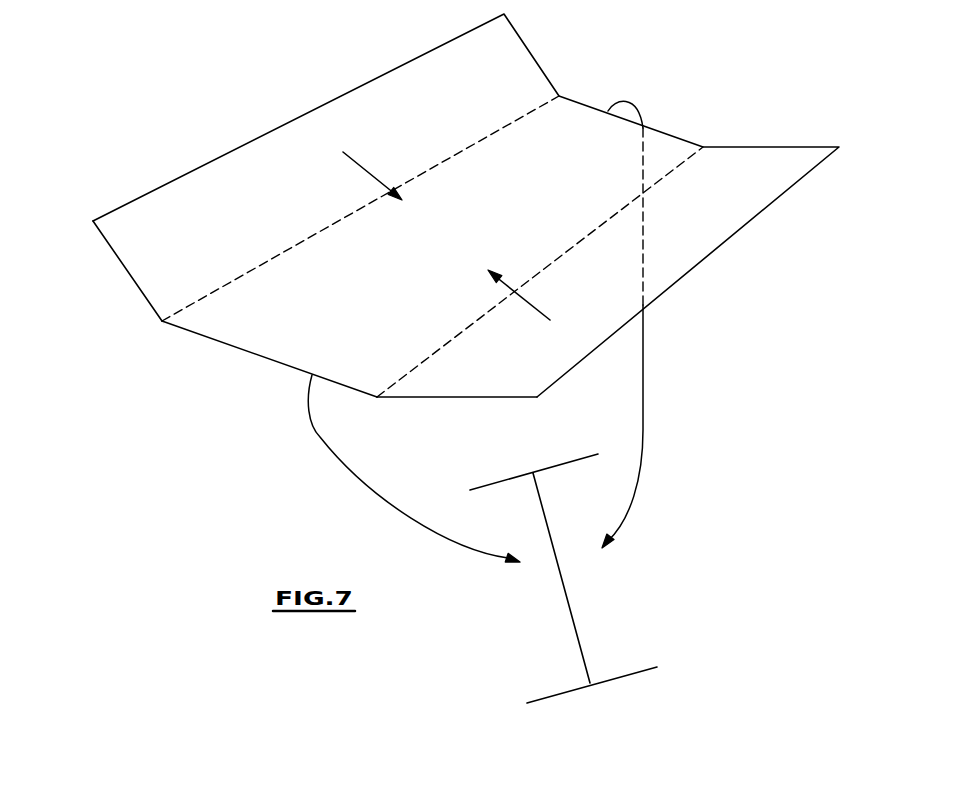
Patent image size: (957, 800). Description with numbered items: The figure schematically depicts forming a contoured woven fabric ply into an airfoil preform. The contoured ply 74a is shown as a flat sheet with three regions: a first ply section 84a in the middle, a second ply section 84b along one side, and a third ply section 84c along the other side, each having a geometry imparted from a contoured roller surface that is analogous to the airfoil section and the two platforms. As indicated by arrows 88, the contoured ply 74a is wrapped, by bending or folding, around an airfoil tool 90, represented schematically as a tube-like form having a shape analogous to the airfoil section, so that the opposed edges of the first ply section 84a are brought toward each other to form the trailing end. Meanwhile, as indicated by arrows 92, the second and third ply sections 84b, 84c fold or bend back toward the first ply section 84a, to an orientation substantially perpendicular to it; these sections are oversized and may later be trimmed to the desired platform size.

The contoured ply 74a is at (152, 340).
The first ply section 84a is at (256, 339).
The second ply section 84b is at (121, 258).
The third ply section 84c is at (447, 383).
The arrows 88 is at (316, 437).
The airfoil tool 90 is at (558, 624).
The arrows 92 is at (362, 163).